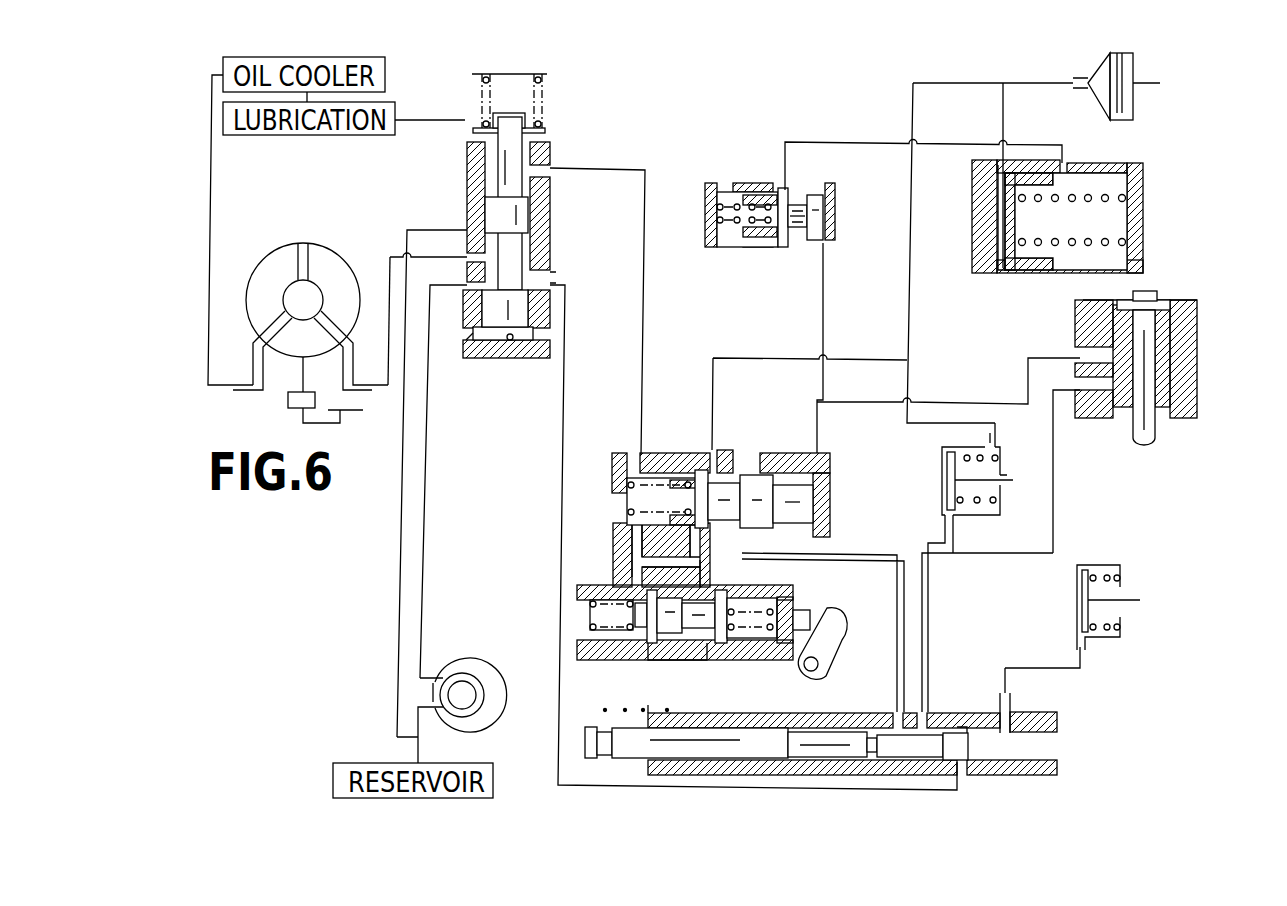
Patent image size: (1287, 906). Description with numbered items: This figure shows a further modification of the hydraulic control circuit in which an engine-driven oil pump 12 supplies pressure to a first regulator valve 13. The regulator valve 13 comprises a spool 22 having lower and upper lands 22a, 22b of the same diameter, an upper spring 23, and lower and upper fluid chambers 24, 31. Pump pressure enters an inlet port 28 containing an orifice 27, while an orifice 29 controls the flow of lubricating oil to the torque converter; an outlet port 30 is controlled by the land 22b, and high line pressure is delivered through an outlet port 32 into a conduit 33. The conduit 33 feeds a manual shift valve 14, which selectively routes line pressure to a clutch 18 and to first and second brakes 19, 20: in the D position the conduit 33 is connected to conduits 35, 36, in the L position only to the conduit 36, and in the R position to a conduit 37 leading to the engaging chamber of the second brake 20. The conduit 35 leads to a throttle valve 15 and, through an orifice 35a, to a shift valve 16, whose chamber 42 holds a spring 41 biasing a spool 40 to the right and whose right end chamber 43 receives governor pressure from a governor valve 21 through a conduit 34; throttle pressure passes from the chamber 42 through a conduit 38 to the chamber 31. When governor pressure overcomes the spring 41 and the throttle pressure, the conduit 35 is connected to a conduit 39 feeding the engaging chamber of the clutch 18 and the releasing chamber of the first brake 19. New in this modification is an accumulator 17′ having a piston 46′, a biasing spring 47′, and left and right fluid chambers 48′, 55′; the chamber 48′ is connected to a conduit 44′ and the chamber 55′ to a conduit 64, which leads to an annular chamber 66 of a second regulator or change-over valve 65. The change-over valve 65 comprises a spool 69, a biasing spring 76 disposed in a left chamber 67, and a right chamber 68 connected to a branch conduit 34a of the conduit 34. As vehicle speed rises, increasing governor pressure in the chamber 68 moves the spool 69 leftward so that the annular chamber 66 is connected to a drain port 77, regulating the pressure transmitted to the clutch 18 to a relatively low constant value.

The oil pump 12 is at (488, 660).
The first regulator valve 13 is at (556, 119).
The manual shift valve 14 is at (719, 709).
The throttle valve 15 is at (809, 606).
The shift valve 16 is at (836, 488).
The accumulator 17′ is at (1148, 186).
The clutch 18 is at (1151, 72).
The first brake 19 is at (1004, 452).
The second brake 20 is at (1128, 579).
The governor valve 21 is at (1178, 296).
The spool 22 is at (522, 245).
The lower land 22a is at (528, 312).
The upper land 22b is at (528, 211).
The upper spring 23 is at (480, 93).
The lower fluid chamber 24 is at (513, 340).
The orifice 27 is at (470, 340).
The inlet port 28 is at (470, 283).
The orifice 29 is at (470, 250).
The outlet port 30 is at (473, 224).
The upper fluid chamber 31 is at (485, 165).
The outlet port 32 is at (541, 277).
The conduit 33 is at (565, 367).
The conduit 34 is at (868, 402).
The branch conduit 34a is at (823, 288).
The conduit 35 is at (897, 643).
The orifice 35a is at (710, 557).
The conduit 36 is at (928, 633).
The conduit 37 is at (1027, 668).
The conduit 38 is at (643, 327).
The conduit 39 is at (855, 358).
The spool 40 is at (748, 492).
The spring 41 is at (635, 485).
The chamber 42 is at (660, 480).
The right end chamber 43 is at (813, 522).
The conduit 44′ is at (1003, 118).
The piston 46′ is at (1037, 173).
The biasing spring 47′ is at (1107, 200).
The left fluid chamber 48′ is at (1000, 240).
The right fluid chamber 55′ is at (1110, 227).
The conduit 64 is at (830, 142).
The change-over valve 65 is at (748, 181).
The annular chamber 66 is at (797, 202).
The left chamber 67 is at (718, 213).
The right chamber 68 is at (827, 200).
The spool 69 is at (797, 218).
The biasing spring 76 is at (737, 222).
The drain port 77 is at (762, 245).